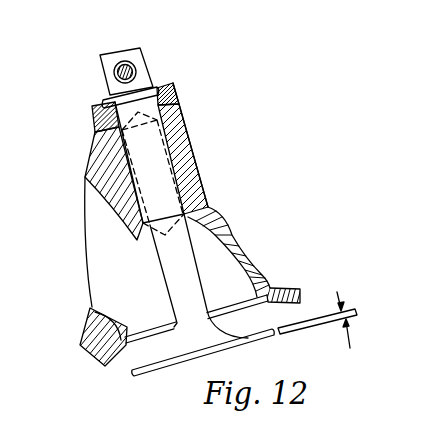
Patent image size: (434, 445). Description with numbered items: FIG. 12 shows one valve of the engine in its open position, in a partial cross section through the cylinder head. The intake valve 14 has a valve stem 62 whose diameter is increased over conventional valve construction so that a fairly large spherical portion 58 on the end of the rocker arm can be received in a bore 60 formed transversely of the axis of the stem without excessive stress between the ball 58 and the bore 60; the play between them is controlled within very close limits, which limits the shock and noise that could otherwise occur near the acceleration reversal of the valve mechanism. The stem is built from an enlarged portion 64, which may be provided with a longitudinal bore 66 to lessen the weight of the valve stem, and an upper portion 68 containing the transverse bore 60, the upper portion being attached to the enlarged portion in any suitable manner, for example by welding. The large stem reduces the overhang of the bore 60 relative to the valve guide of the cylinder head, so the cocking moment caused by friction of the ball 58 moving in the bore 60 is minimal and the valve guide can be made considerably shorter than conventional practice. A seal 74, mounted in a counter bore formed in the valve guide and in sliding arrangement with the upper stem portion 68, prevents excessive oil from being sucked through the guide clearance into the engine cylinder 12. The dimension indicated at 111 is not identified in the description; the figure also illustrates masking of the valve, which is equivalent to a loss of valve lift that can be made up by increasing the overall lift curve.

The engine cylinder 12 is at (203, 165).
The intake valve 14 is at (167, 364).
The spherical portion 58 is at (121, 60).
The bore 60 is at (128, 61).
The valve stem 62 is at (171, 274).
The enlarged portion 64 is at (204, 191).
The longitudinal bore 66 is at (184, 127).
The upper portion 68 is at (159, 94).
The seal 74 is at (97, 112).
The plate thickness dimension 111 is at (342, 309).